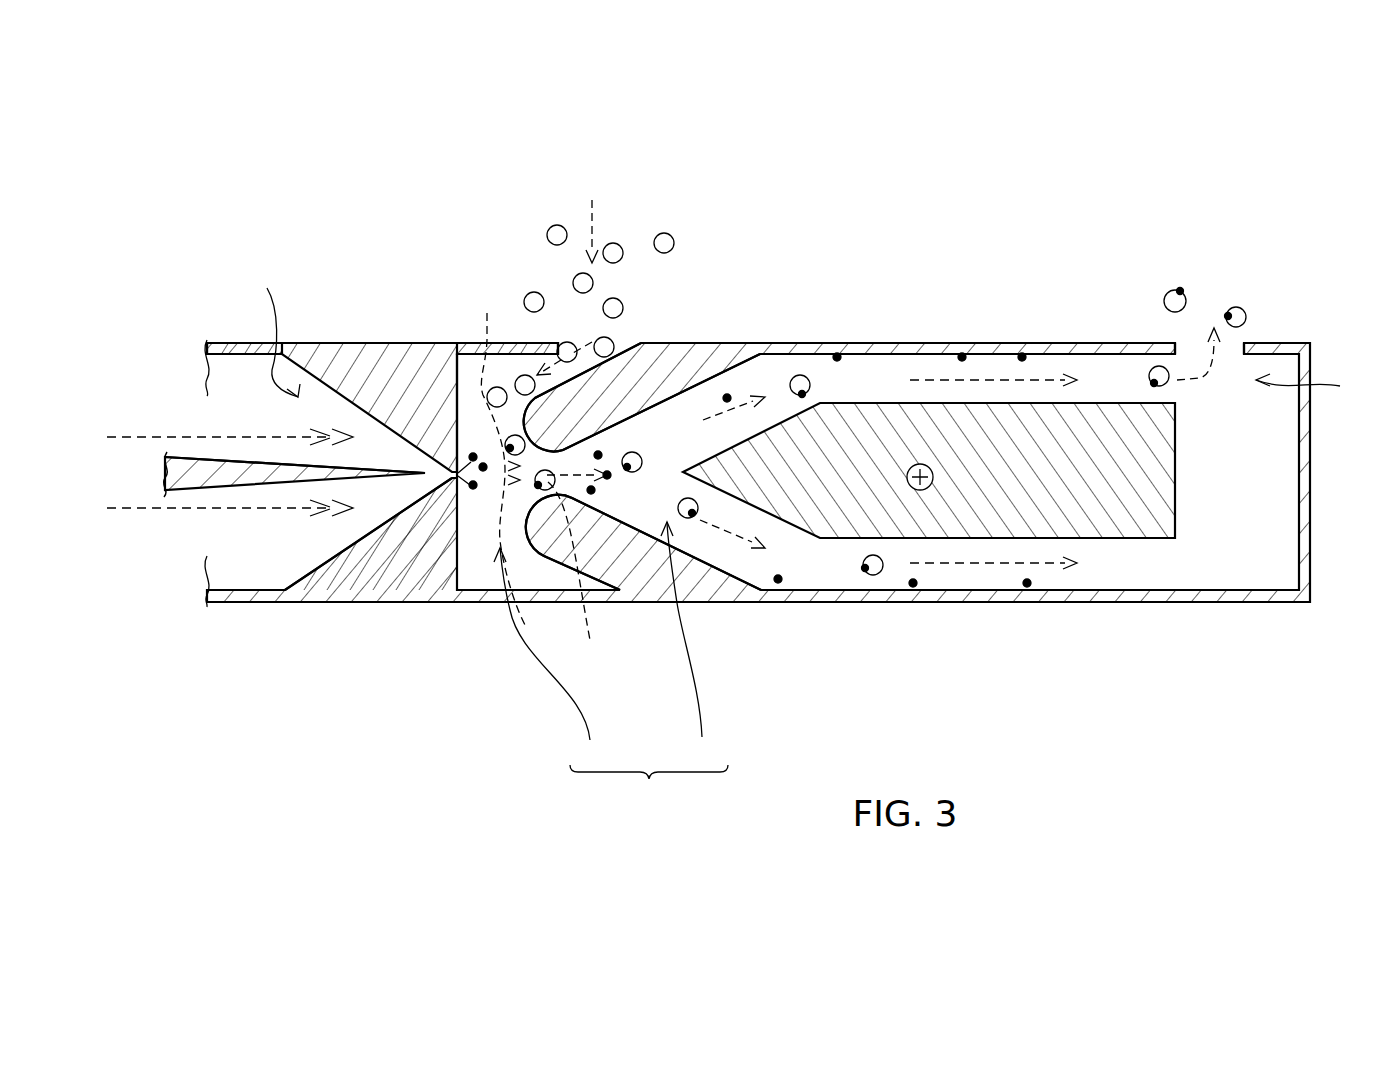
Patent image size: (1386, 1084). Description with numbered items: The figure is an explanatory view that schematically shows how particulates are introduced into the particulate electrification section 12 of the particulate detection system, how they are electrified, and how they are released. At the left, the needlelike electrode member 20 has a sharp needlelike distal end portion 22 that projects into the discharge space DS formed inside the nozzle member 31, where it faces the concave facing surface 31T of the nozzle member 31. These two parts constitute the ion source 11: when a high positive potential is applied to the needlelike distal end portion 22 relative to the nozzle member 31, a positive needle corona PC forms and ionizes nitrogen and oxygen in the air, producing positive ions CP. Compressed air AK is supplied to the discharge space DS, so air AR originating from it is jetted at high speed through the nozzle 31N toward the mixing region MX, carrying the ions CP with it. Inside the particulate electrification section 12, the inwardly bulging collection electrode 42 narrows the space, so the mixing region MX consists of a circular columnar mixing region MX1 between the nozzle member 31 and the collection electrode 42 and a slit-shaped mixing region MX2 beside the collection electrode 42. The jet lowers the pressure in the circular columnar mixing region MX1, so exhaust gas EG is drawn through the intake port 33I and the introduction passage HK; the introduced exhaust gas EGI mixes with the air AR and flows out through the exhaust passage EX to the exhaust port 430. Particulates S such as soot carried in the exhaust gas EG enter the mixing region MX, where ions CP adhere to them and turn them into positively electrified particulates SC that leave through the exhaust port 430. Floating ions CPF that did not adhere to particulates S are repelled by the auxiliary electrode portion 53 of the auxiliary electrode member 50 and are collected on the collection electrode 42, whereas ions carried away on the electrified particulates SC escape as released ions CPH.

The ion source 11 is at (757, 493).
The particulate electrification section 12 is at (1117, 603).
The needlelike electrode member 20 is at (265, 445).
The needlelike distal end portion 22 is at (256, 461).
The nozzle member 31 is at (382, 439).
The nozzle 31N is at (458, 395).
The facing surface 31T is at (348, 547).
The intake port 33I is at (622, 345).
The collection electrode 42 is at (650, 585).
The auxiliary electrode portion 53 is at (870, 403).
The auxiliary electrode member 50 is at (929, 413).
The exhaust port 430 is at (1232, 347).
The discharge space DS is at (275, 330).
The compressed air AK is at (212, 473).
The exhaust gas EG is at (593, 213).
The introduced exhaust gas EGI is at (494, 457).
The air AR is at (985, 377).
The particulates S is at (530, 372).
The electrified particulates SC is at (801, 374).
The introduction passage HK is at (673, 357).
The positive needle corona PC is at (470, 490).
The ions CP is at (480, 470).
The released ions CPH is at (1181, 290).
The floating ions CPF is at (912, 586).
The mixing region MX is at (611, 664).
The circular columnar mixing region MX1 is at (557, 658).
The slit-shaped mixing region MX2 is at (692, 645).
The exhaust passage EX is at (1313, 386).